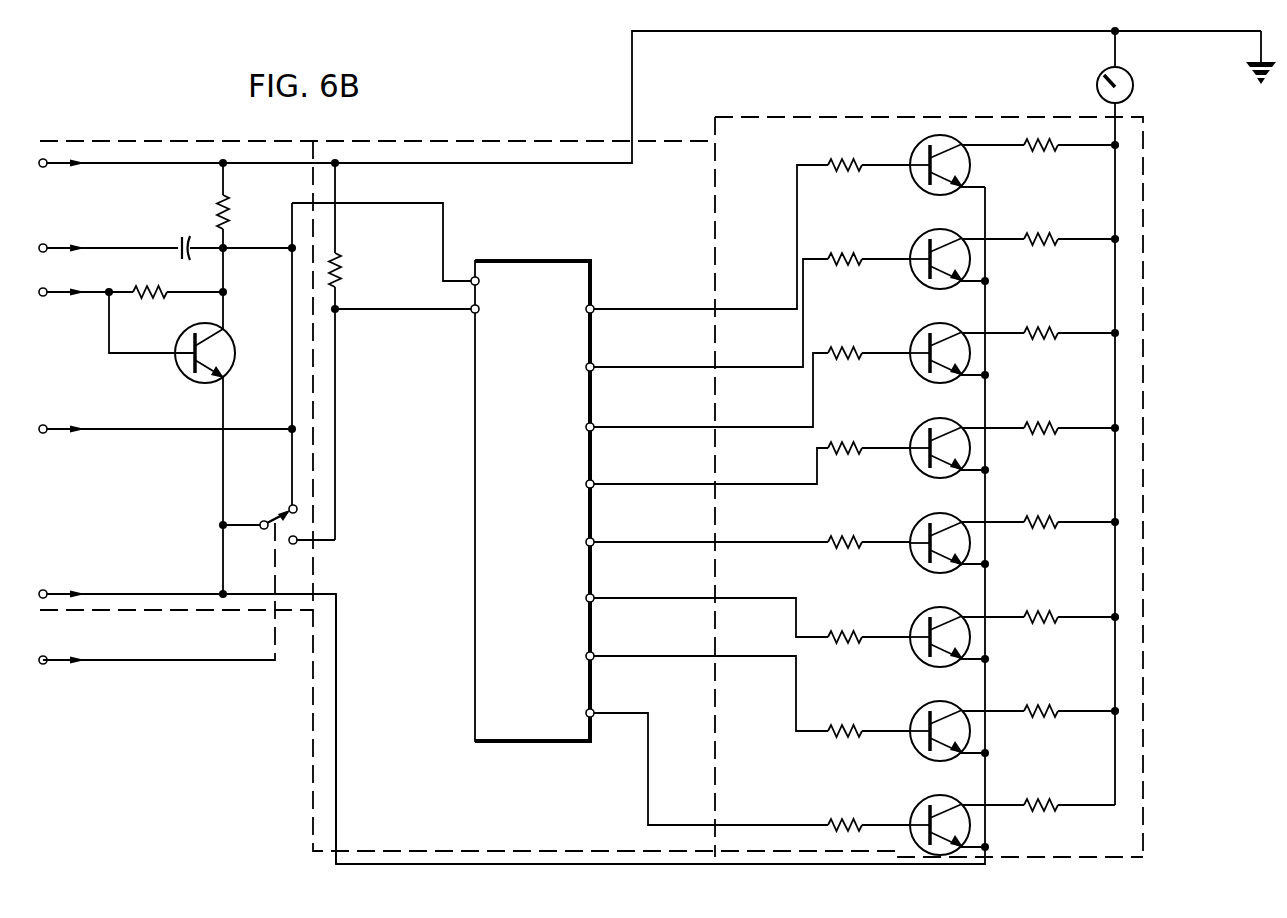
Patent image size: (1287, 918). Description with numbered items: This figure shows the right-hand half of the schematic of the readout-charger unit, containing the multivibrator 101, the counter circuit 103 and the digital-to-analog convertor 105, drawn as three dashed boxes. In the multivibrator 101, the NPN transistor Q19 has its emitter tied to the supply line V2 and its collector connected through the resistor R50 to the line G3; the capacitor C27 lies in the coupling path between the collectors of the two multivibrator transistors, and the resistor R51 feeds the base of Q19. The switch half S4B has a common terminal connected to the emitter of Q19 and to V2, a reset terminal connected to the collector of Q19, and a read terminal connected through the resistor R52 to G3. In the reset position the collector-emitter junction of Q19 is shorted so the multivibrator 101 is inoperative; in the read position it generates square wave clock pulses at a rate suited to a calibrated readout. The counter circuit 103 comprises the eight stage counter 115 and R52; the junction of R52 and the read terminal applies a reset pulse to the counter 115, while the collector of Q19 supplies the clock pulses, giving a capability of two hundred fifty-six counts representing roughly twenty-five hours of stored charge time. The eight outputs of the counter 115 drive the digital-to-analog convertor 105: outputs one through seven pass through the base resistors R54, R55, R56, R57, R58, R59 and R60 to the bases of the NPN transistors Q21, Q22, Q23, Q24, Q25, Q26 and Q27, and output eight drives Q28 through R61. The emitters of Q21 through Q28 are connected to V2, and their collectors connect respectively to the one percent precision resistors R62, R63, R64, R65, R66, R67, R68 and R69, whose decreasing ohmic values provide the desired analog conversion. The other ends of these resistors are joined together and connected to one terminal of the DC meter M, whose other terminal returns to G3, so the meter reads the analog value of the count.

The multi-vibrator 101 is at (175, 606).
The digital counter 103 is at (325, 729).
The digital-to-analog convertor 105 is at (1143, 335).
The eight stage counter 115 is at (571, 262).
The G3 supply line G3 is at (787, 31).
The V2 supply line V2 is at (337, 658).
The DC meter M is at (1125, 418).
The resistor R50 is at (243, 205).
The resistor R51 is at (166, 282).
The resistor R52 is at (354, 351).
The capacitor C27 is at (169, 242).
The NPN transistor Q19 is at (191, 337).
The switch half S4B is at (279, 524).
The NPN transistor Q21 is at (925, 168).
The NPN transistor Q22 is at (925, 262).
The NPN transistor Q23 is at (925, 356).
The NPN transistor Q24 is at (925, 451).
The NPN transistor Q25 is at (925, 546).
The NPN transistor Q26 is at (925, 640).
The NPN transistor Q27 is at (925, 734).
The NPN transistor Q28 is at (925, 819).
The resistor R54 is at (845, 154).
The resistor R55 is at (845, 248).
The resistor R56 is at (845, 342).
The resistor R57 is at (845, 437).
The resistor R58 is at (845, 531).
The resistor R59 is at (845, 626).
The resistor R60 is at (845, 720).
The resistor R61 is at (845, 814).
The precision resistor R62 is at (1041, 158).
The precision resistor R63 is at (1041, 252).
The precision resistor R64 is at (1041, 346).
The precision resistor R65 is at (1041, 441).
The precision resistor R66 is at (1041, 535).
The precision resistor R67 is at (1041, 630).
The precision resistor R68 is at (1041, 724).
The precision resistor R69 is at (1041, 818).